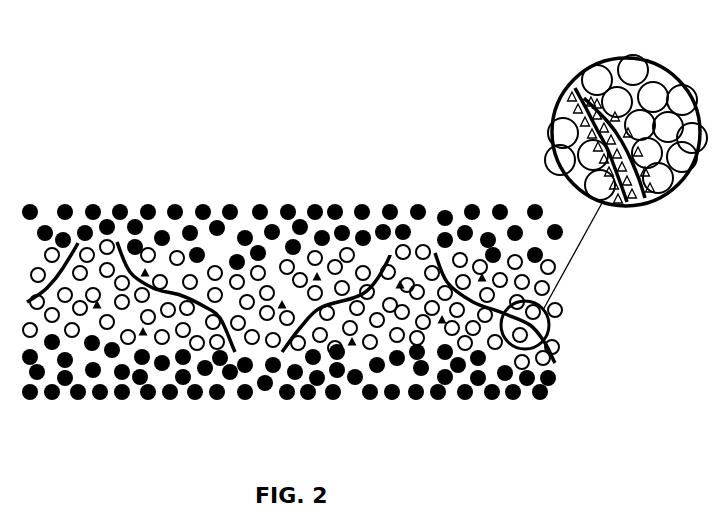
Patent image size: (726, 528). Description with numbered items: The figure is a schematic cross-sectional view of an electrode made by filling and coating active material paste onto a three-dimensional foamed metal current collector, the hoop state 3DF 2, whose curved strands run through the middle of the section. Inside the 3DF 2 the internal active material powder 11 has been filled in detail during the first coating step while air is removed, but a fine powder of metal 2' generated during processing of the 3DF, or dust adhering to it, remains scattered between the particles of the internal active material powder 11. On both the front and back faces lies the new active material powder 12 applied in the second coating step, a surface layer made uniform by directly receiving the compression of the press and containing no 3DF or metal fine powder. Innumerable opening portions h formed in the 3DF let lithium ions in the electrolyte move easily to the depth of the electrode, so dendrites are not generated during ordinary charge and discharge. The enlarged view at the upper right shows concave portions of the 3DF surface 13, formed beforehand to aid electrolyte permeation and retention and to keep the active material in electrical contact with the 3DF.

The hoop state 3DF 2 is at (327, 219).
The fine powder of metal 2' is at (290, 238).
The internal active material powder 11 is at (390, 303).
The new active material powder 12 is at (423, 212).
The concave portions of the 3DF surface 13 is at (617, 120).
The opening portion h is at (259, 352).